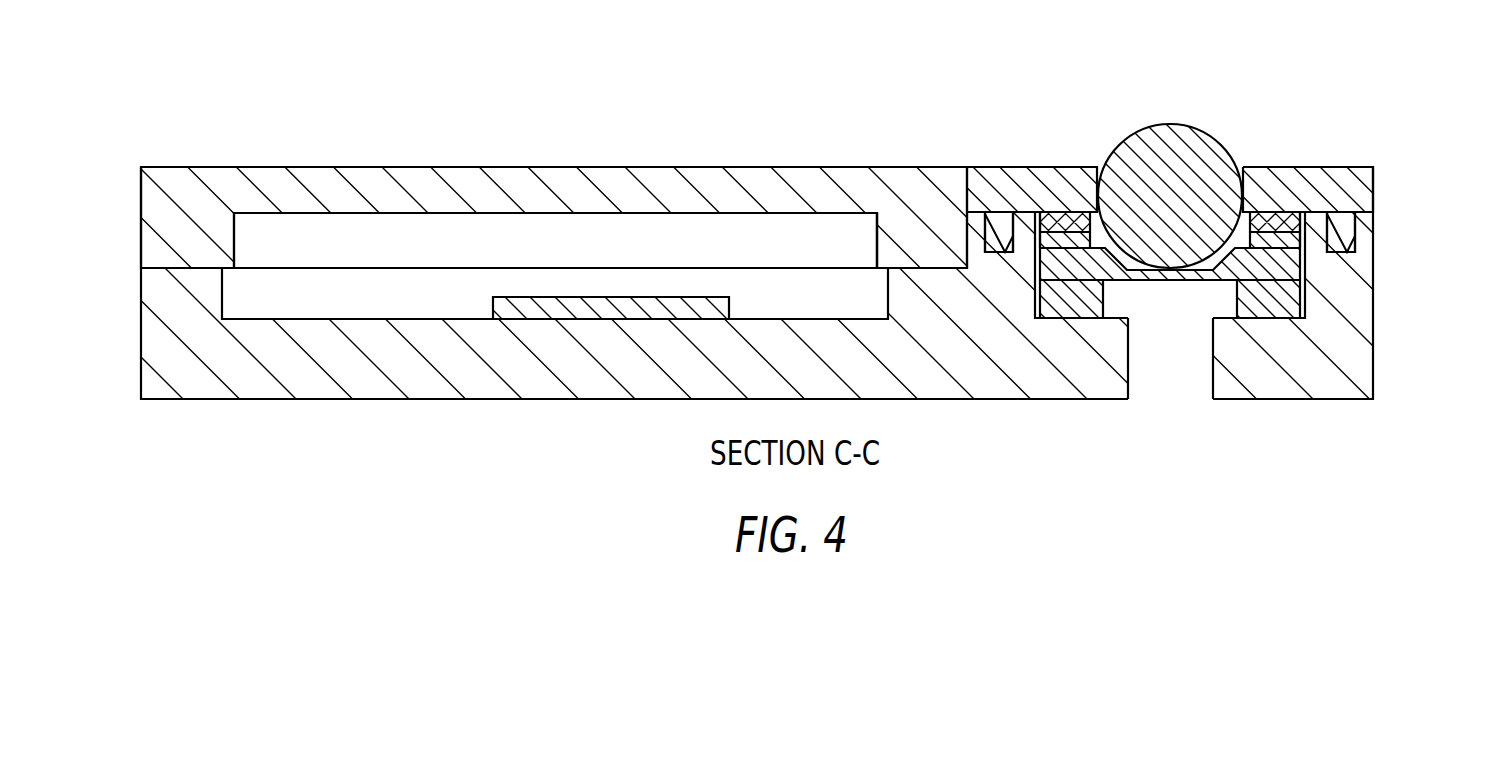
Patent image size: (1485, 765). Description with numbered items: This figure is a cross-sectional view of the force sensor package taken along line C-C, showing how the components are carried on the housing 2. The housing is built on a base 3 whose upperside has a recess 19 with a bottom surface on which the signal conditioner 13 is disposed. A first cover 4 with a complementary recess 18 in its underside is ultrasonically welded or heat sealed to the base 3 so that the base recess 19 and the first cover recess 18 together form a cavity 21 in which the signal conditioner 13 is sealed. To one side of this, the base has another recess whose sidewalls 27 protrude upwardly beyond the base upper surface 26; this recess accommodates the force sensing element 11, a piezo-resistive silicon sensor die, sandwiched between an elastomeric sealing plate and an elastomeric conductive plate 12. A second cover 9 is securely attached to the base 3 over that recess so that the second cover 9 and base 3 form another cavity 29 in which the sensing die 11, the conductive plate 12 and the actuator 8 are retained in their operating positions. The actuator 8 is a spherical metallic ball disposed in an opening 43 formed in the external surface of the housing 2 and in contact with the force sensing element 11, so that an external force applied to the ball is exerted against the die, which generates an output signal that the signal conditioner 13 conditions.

The housing 2 is at (951, 399).
The base 3 is at (510, 386).
The first cover 4 is at (760, 190).
The actuator 8 is at (1182, 123).
The second cover 9 is at (1374, 182).
The force sensing element 11 is at (1287, 260).
The elastomeric conductive plate 12 is at (1302, 297).
The signal conditioner 13 is at (717, 307).
The first cover recess 18 is at (350, 243).
The base recess 19 is at (376, 301).
The cavity 21 is at (514, 253).
The base upper surface 26 is at (929, 266).
The sidewalls 27 is at (1374, 244).
The cavity 29 is at (1181, 298).
The opening 43 is at (1243, 167).